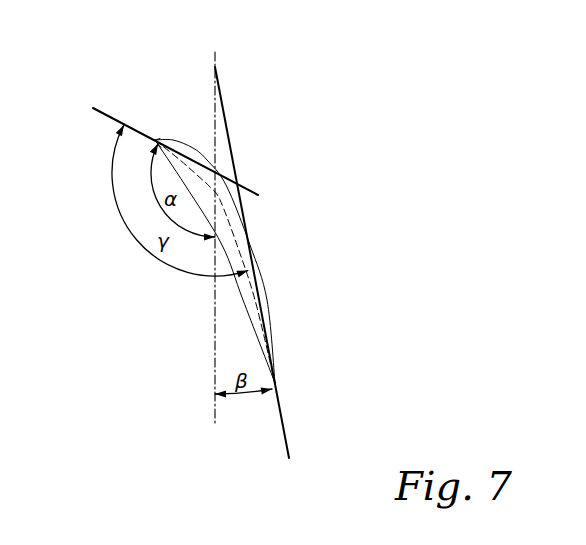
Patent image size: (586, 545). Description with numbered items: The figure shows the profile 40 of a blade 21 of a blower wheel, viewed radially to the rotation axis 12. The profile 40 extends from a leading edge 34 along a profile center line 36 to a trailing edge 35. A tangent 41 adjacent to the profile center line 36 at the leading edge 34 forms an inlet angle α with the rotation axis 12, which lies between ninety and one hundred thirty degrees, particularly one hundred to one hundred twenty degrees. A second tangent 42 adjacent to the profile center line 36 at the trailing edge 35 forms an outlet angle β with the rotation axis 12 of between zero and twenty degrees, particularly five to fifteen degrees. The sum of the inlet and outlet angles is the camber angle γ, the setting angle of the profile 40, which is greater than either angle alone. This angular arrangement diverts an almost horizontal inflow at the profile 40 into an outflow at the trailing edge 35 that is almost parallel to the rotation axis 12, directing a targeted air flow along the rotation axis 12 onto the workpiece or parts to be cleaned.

The rotation axis 12 is at (214, 67).
The blade 21 is at (255, 256).
The leading edge 34 is at (155, 138).
The trailing edge 35 is at (279, 400).
The profile center line 36 is at (225, 221).
The profile 40 is at (193, 150).
The tangent 41 is at (103, 111).
The second tangent 42 is at (283, 450).